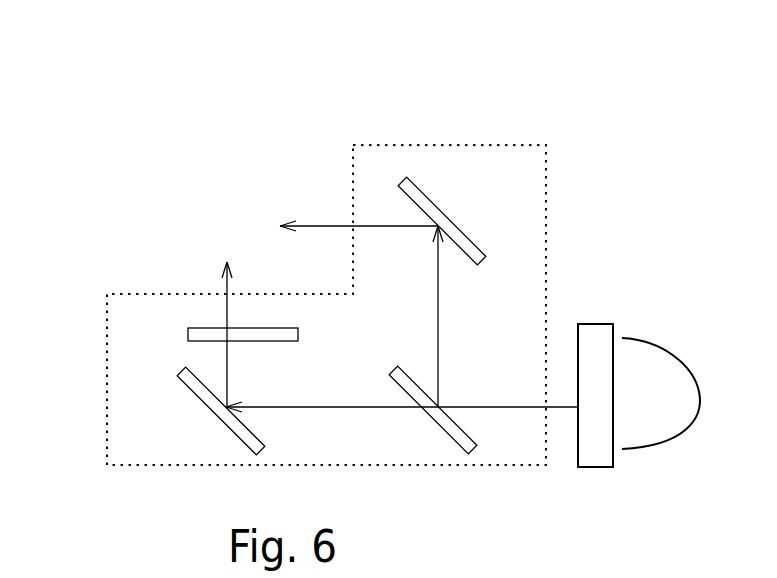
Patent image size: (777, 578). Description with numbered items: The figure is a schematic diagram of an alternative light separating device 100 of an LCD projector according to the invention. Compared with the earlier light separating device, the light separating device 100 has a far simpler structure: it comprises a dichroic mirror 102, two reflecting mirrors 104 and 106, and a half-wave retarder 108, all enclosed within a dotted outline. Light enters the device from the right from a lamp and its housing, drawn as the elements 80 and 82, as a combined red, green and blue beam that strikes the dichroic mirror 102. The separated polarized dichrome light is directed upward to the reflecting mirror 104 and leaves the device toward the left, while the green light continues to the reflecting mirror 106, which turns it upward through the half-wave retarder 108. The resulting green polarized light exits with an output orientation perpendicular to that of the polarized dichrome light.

The light separating device 100 is at (199, 100).
The dichroic mirror 102 is at (442, 432).
The reflecting mirror 104 is at (423, 190).
The reflecting mirror 106 is at (200, 400).
The half-wave retarder 108 is at (188, 336).
The light source housing 82 is at (595, 324).
The lamp reflector 80 is at (655, 345).